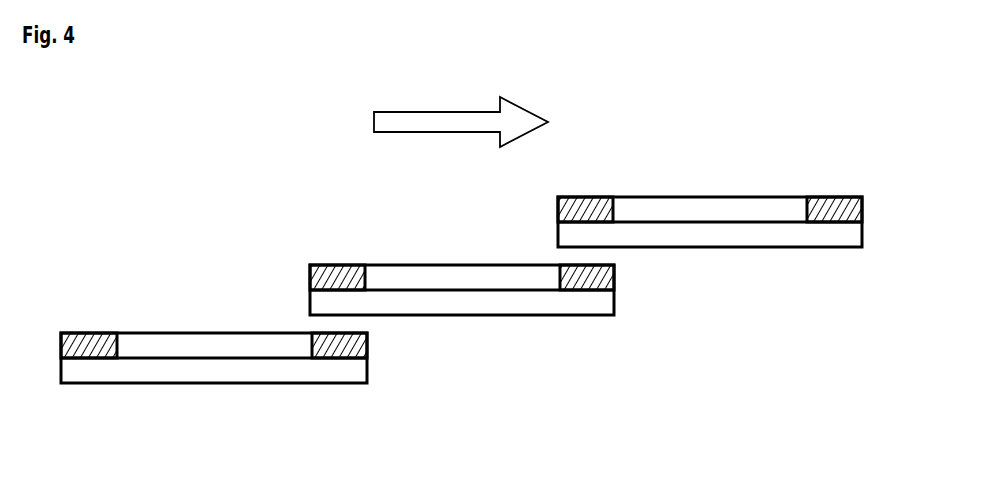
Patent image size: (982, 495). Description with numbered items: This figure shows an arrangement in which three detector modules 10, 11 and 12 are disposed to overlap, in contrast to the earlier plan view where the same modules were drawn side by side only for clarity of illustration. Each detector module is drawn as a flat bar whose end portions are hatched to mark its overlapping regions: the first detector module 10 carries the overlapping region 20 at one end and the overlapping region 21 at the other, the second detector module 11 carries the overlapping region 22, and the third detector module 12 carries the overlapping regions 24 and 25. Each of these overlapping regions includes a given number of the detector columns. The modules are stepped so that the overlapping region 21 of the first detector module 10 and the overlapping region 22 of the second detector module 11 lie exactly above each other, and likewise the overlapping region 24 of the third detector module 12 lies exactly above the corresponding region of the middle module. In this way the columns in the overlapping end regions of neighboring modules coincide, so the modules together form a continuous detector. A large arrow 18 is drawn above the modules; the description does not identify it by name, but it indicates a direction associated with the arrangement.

The detector module 10 is at (213, 370).
The detector module 11 is at (460, 303).
The detector module 12 is at (710, 235).
The transport direction arrow 18 is at (443, 122).
The overlapping region 20 is at (115, 328).
The overlapping region 21 is at (362, 387).
The overlapping region 22 is at (365, 262).
The overlapping region 24 is at (612, 193).
The overlapping region 25 is at (860, 193).